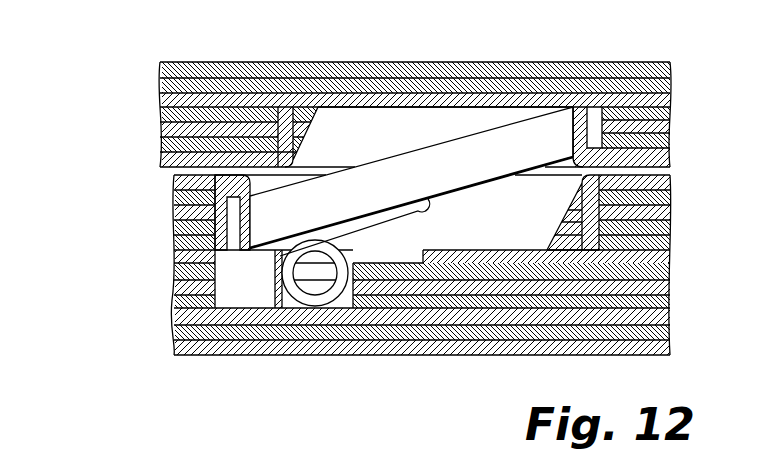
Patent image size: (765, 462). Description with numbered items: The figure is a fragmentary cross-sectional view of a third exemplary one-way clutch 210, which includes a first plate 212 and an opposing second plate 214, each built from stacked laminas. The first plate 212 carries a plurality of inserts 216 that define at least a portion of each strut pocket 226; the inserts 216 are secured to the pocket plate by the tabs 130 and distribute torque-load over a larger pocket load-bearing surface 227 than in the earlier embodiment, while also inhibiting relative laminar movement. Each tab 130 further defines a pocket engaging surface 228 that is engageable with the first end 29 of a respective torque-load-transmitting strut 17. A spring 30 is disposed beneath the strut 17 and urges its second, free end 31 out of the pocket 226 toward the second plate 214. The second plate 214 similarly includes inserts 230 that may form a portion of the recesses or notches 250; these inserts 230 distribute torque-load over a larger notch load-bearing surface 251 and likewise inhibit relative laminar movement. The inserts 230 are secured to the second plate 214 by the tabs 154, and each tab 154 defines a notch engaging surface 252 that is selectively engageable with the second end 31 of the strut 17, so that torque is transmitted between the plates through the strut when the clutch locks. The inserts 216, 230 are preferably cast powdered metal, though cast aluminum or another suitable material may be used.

The third exemplary one-way clutch 210 is at (107, 167).
The second plate 214 is at (147, 99).
The first plate 212 is at (157, 270).
The inserts 216 is at (196, 325).
The torque-load-transmitting strut 17 is at (482, 132).
The recesses or notches 250 is at (387, 107).
The notch engaging surface 252 is at (558, 138).
The tabs 154 is at (567, 95).
The notch load-bearing surface 251 is at (570, 107).
The inserts 230 is at (598, 110).
The second free end of strut 31 is at (638, 123).
The first end of strut 29 is at (213, 197).
The pocket engaging surface 228 is at (213, 250).
The pocket load-bearing surface 227 is at (218, 259).
The tabs 130 is at (270, 213).
The spring 30 is at (332, 301).
The strut pockets 226 is at (401, 264).